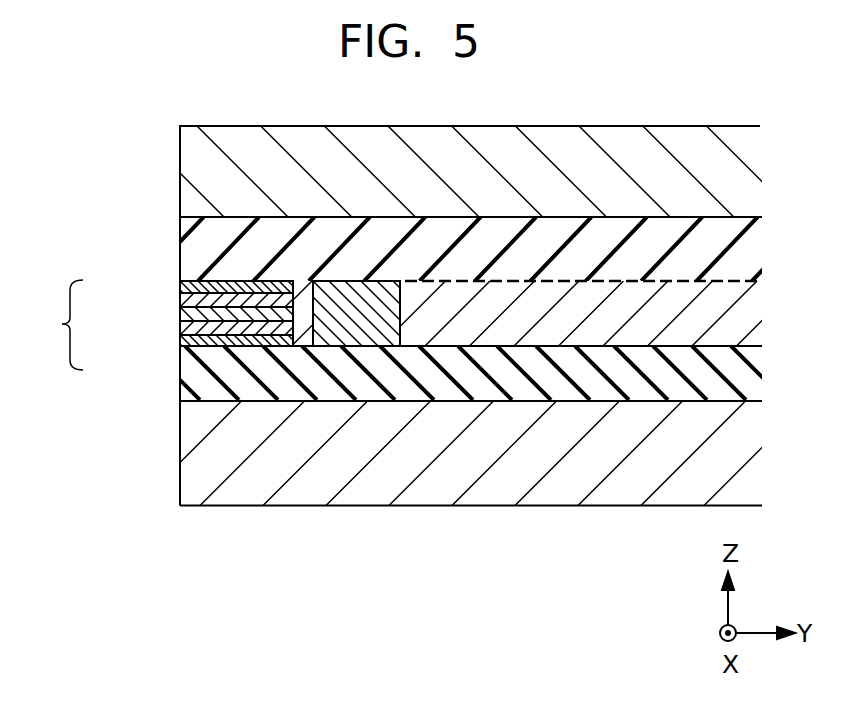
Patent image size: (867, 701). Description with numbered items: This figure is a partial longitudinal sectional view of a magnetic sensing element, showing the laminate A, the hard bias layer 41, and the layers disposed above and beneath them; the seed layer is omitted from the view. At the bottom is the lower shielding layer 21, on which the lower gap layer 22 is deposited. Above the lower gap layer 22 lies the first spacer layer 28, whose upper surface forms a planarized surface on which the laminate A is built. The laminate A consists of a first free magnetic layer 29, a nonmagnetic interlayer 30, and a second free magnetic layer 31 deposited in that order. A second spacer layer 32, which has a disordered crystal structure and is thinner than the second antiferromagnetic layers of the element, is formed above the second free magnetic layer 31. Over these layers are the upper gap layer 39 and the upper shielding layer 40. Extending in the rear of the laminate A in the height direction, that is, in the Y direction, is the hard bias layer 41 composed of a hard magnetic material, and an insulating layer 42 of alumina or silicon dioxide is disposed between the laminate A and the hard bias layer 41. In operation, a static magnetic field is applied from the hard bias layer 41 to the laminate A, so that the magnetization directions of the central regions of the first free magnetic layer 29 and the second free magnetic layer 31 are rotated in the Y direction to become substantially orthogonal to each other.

The upper shielding layer 40 is at (217, 187).
The upper gap layer 39 is at (217, 249).
The second spacer layer 32 is at (184, 284).
The second free magnetic layer 31 is at (184, 295).
The nonmagnetic interlayer 30 is at (184, 315).
The first free magnetic layer 29 is at (184, 334).
The first spacer layer 28 is at (184, 347).
The lower gap layer 22 is at (195, 387).
The lower shielding layer 21 is at (200, 468).
The hard bias layer 41 is at (360, 330).
The insulating layer 42 is at (306, 338).
The laminate A is at (165, 325).